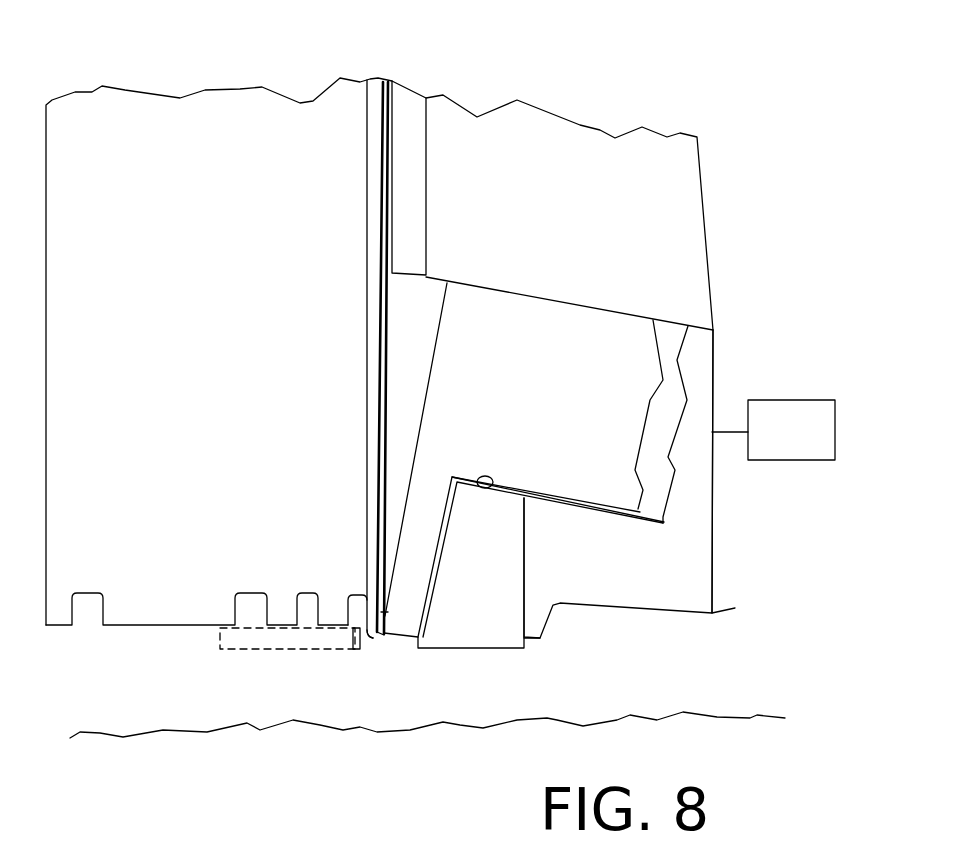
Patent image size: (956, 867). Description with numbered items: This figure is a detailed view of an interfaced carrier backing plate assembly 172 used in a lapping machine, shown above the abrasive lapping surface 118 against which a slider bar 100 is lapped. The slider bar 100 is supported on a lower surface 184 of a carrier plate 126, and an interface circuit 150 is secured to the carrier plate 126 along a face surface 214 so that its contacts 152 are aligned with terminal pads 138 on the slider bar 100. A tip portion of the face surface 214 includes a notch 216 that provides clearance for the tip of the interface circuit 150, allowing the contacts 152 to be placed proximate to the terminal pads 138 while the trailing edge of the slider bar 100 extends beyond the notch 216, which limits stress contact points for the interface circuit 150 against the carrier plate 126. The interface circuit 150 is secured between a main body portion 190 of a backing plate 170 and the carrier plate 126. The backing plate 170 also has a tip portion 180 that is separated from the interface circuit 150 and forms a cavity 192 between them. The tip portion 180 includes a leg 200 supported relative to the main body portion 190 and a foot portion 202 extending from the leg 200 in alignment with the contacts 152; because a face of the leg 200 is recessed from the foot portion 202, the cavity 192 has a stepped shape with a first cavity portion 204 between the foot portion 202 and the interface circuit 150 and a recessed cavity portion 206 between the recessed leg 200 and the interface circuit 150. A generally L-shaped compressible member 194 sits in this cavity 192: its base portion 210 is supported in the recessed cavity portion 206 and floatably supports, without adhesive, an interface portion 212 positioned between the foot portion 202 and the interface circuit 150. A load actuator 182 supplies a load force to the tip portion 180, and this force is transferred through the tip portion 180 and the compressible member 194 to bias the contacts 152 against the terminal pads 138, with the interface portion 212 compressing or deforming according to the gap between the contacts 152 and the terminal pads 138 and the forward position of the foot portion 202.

The slider bar 100 is at (242, 638).
The lapping surface 118 is at (557, 720).
The carrier plate 126 is at (192, 110).
The terminal pads 138 is at (361, 652).
The interface circuit 150 is at (375, 95).
The contacts 152 is at (367, 640).
The backing plate 170 is at (588, 115).
The interfaced carrier backing plate assembly 172 is at (437, 75).
The tip portion 180 is at (695, 360).
The load actuator 182 is at (772, 400).
The lower surface 184 is at (157, 625).
The main body portion 190 is at (638, 233).
The cavity 192 is at (430, 325).
The compressible member 194 is at (484, 300).
The leg 200 is at (693, 493).
The foot portion 202 is at (635, 568).
The first cavity portion 204 is at (385, 527).
The recessed cavity portion 206 is at (488, 488).
The base portion 210 is at (563, 411).
The interface portion 212 is at (430, 565).
The face surface 214 is at (368, 340).
The notch 216 is at (344, 590).